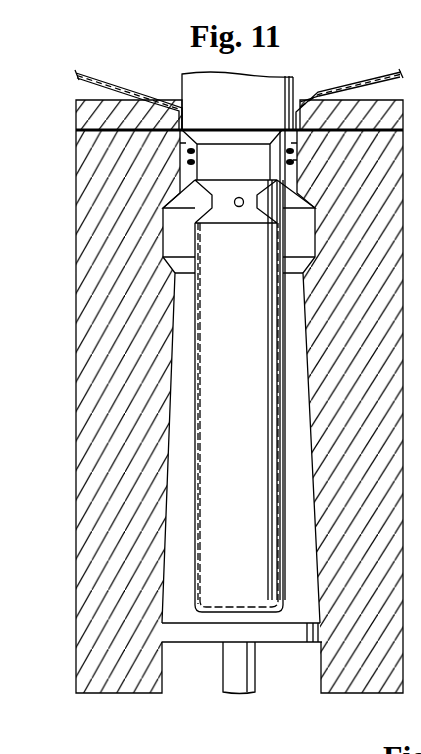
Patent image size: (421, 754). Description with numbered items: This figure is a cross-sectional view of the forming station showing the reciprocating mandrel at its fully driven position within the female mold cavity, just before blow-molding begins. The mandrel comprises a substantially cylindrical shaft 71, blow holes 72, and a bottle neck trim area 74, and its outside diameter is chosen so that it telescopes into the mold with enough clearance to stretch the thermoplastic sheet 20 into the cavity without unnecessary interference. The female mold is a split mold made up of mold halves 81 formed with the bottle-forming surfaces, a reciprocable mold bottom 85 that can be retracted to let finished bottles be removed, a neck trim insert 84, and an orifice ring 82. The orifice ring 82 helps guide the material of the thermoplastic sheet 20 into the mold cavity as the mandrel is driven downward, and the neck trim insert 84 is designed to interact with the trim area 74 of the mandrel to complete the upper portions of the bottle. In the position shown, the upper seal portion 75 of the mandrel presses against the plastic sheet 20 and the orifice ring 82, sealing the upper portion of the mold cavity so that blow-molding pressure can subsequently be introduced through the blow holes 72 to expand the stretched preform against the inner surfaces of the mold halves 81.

The thermoplastic sheet 20 is at (357, 82).
The cylindrical shaft 71 is at (215, 365).
The blow holes 72 is at (235, 202).
The bottle neck trim area 74 is at (207, 133).
The upper seal portion 75 is at (284, 107).
The mold halves 81 is at (95, 458).
The orifice ring 82 is at (86, 115).
The neck trim insert 84 is at (188, 160).
The reciprocable mold bottom 85 is at (212, 636).